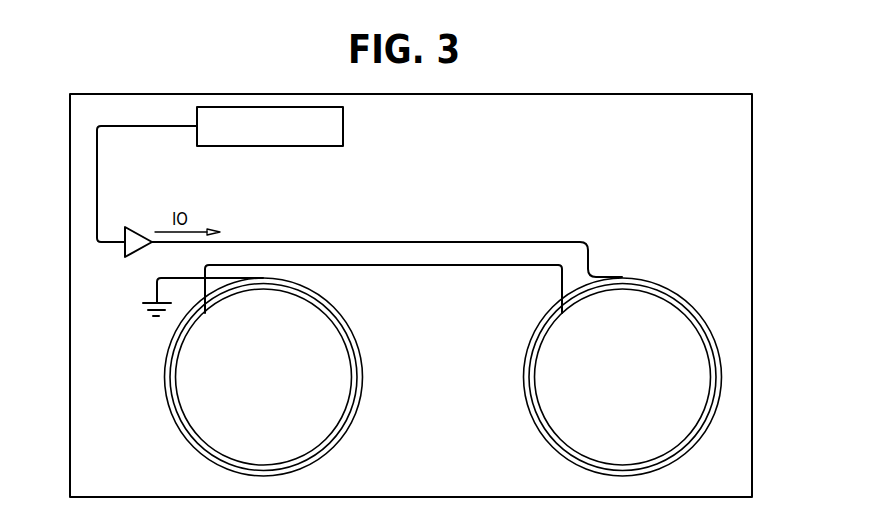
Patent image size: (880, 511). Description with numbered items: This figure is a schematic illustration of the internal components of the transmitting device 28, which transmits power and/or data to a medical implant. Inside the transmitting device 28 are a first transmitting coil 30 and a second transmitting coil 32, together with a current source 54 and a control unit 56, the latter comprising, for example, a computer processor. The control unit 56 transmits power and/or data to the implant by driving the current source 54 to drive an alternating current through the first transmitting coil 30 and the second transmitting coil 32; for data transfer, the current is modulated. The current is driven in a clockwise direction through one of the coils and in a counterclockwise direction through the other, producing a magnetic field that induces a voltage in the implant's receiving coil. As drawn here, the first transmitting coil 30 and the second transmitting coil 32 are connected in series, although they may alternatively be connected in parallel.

The transmitting device 28 is at (610, 94).
The first transmitting coil 30 is at (657, 280).
The second transmitting coil 32 is at (178, 432).
The current source 54 is at (132, 228).
The control unit 56 is at (302, 147).